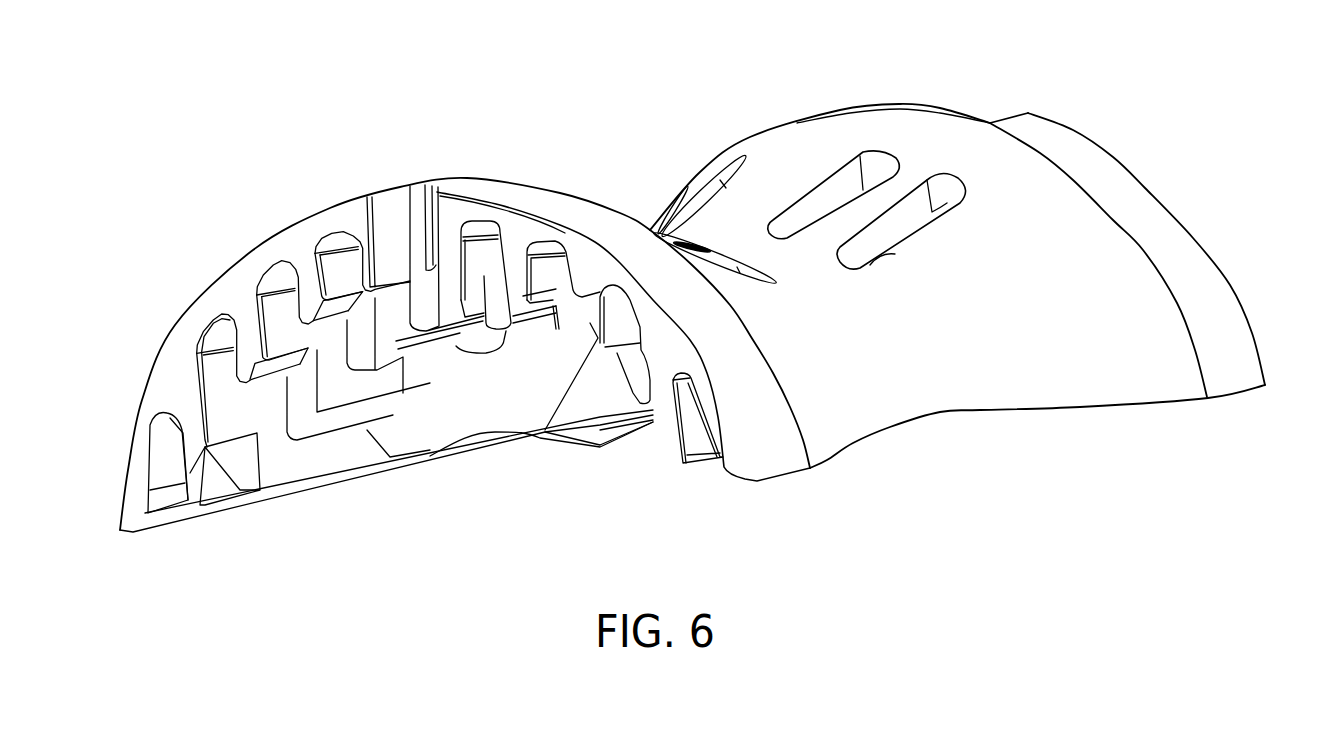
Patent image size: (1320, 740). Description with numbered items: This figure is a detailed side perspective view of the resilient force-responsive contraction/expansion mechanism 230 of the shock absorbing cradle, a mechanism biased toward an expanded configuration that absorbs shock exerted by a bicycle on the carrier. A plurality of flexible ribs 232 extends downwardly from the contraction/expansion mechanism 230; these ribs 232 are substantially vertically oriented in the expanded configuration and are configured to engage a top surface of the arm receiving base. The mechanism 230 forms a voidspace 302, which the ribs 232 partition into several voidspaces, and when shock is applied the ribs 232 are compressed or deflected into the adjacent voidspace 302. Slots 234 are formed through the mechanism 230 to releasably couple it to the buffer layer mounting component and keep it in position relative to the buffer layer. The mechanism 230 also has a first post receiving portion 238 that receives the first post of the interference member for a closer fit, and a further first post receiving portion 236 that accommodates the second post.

The resilient force-responsive contraction/expansion mechanism 230 is at (976, 252).
The flexible rib 232 is at (465, 338).
The carriage engagement slot 234 is at (947, 192).
The first post receiving portion 236 is at (947, 109).
The first post receiving portion 238 is at (418, 210).
The voidspace 302 is at (449, 415).